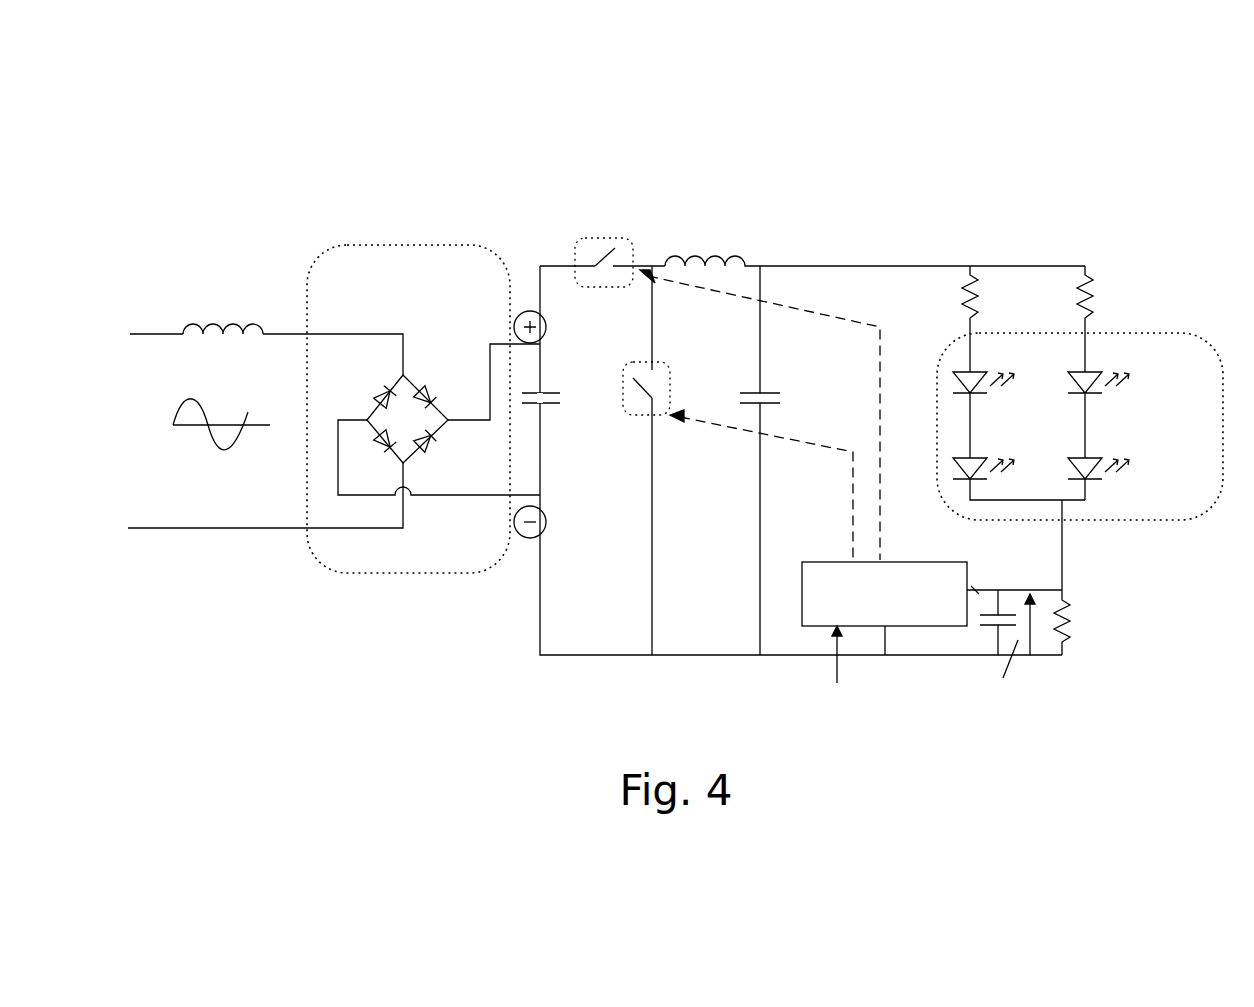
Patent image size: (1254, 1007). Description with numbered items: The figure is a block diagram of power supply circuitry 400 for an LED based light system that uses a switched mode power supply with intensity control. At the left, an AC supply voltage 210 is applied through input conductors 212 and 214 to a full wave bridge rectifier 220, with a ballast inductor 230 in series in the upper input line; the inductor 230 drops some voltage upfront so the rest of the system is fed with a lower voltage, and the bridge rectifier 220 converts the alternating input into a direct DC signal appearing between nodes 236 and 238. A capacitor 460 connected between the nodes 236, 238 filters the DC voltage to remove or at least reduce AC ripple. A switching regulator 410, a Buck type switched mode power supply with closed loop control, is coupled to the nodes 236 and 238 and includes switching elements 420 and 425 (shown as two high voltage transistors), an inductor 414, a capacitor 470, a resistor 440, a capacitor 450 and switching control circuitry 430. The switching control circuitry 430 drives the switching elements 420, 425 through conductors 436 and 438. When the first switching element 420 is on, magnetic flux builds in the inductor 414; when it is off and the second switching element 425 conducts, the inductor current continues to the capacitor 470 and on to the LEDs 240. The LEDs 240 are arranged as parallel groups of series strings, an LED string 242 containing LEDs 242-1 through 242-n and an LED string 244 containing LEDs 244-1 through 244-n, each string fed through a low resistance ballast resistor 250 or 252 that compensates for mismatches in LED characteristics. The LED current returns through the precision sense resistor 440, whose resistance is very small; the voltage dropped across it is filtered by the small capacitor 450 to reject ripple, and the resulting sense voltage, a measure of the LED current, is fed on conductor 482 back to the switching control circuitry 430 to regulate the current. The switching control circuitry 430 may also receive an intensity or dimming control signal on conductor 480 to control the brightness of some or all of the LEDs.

The power supply circuitry 400 is at (300, 125).
The AC supply voltage 210 is at (186, 405).
The input conductor 212 is at (150, 337).
The input conductor 214 is at (148, 530).
The inductor 230 is at (190, 322).
The full wave bridge rectifier 220 is at (395, 245).
The node 236 is at (532, 279).
The node 238 is at (528, 566).
The switching regulator 410 is at (534, 679).
The switching element 420 is at (607, 237).
The switching element 425 is at (660, 362).
The inductor 414 is at (713, 252).
The conductor 436 is at (810, 313).
The conductor 438 is at (795, 440).
The capacitor 460 is at (548, 385).
The capacitor 470 is at (768, 388).
The switching control circuitry 430 is at (838, 560).
The conductor 480 is at (835, 672).
The conductor 482 is at (985, 590).
The capacitor 450 is at (990, 632).
The resistor 440 is at (1075, 608).
The resistor 252 is at (978, 305).
The resistor 250 is at (1093, 287).
The LEDs 240 is at (1130, 520).
The LED string 242 is at (1090, 347).
The LED string 244 is at (1015, 497).
The LED 242-1 is at (1100, 372).
The LED 242-n is at (1100, 458).
The LED 244-1 is at (985, 372).
The LED 244-n is at (985, 458).